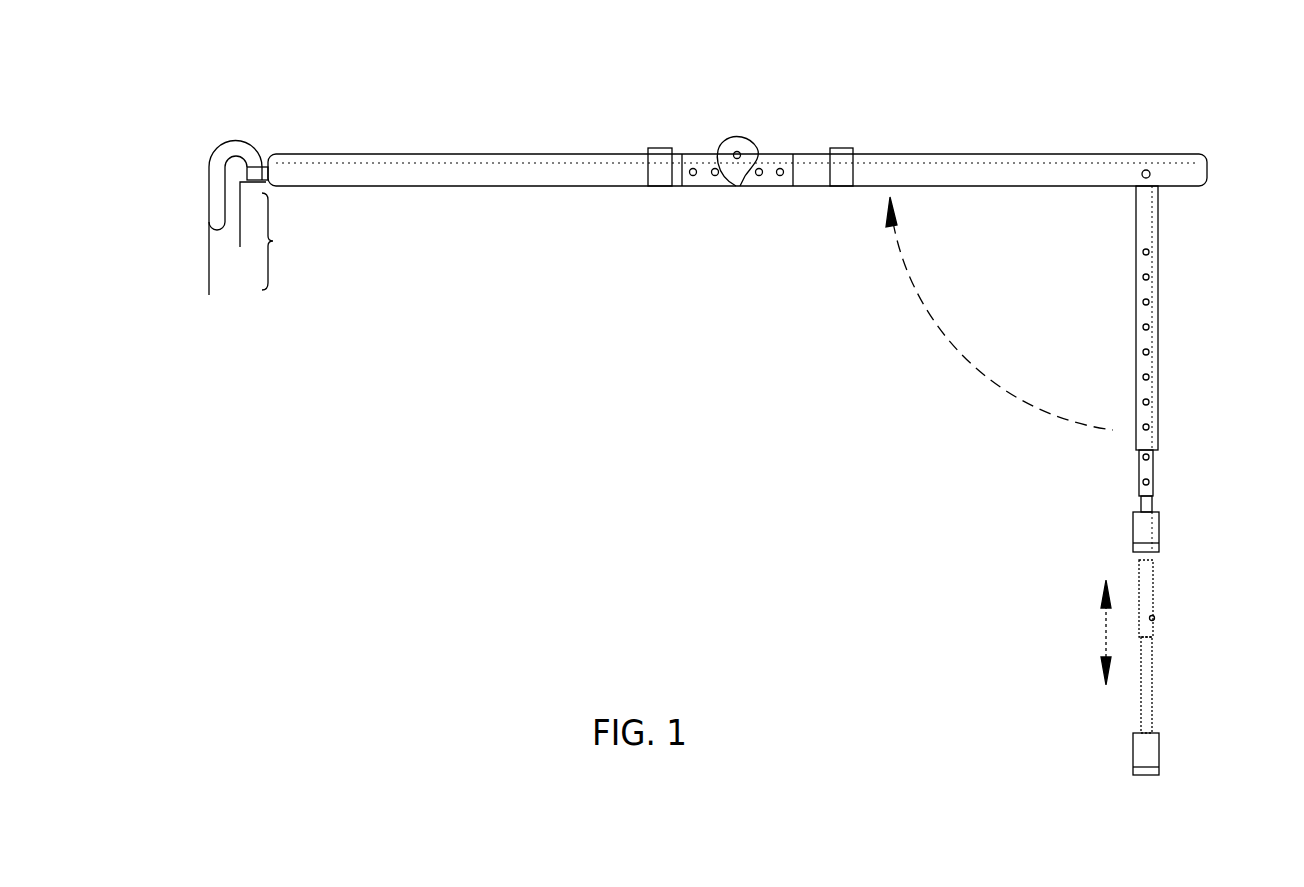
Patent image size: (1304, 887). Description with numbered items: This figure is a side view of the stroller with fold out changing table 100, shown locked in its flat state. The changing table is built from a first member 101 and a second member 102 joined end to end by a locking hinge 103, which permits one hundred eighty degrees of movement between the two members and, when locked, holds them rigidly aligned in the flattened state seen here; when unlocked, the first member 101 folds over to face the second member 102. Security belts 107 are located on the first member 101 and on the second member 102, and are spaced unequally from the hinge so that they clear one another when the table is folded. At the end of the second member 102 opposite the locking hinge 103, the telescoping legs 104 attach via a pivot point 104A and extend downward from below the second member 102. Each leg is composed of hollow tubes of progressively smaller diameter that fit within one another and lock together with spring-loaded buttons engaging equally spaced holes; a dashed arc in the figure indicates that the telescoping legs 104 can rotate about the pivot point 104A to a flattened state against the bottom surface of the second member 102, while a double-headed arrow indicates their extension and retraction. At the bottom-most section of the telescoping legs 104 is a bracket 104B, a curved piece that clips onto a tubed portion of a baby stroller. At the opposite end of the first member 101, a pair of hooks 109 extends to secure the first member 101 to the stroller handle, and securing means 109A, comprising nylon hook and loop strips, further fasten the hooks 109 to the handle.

The stroller with fold out changing table 100 is at (1082, 118).
The first member 101 is at (405, 154).
The second member 102 is at (990, 154).
The locking hinge 103 is at (737, 140).
The telescoping legs 104 is at (1148, 258).
The pivot point 104A is at (1151, 176).
The bracket 104B is at (1160, 527).
The security belt 107 is at (660, 148).
The hooks 109 is at (236, 140).
The securing means 109A is at (307, 241).